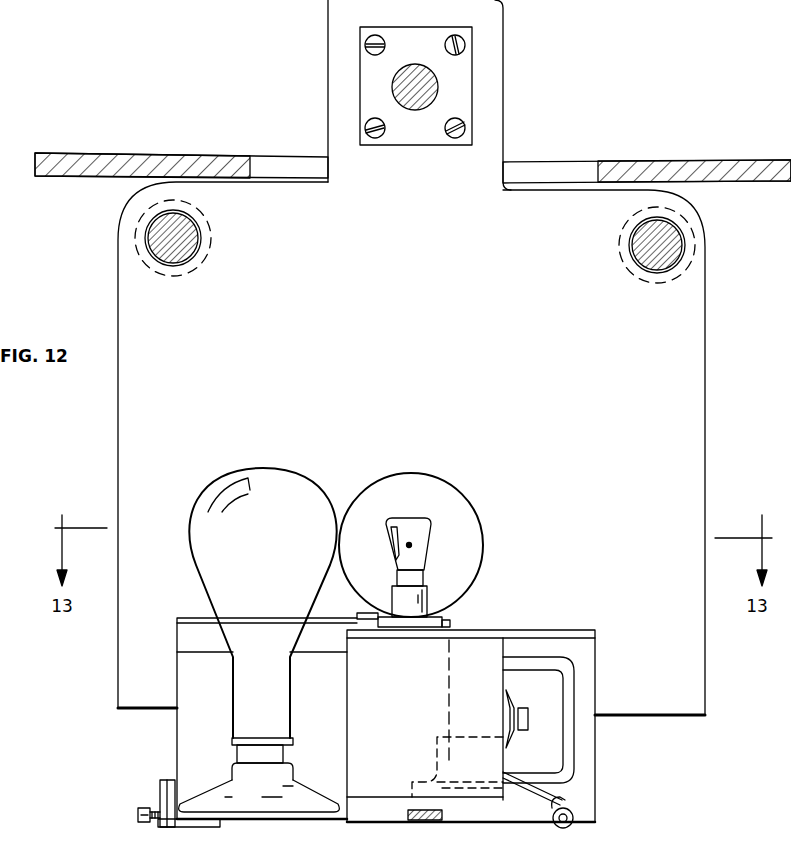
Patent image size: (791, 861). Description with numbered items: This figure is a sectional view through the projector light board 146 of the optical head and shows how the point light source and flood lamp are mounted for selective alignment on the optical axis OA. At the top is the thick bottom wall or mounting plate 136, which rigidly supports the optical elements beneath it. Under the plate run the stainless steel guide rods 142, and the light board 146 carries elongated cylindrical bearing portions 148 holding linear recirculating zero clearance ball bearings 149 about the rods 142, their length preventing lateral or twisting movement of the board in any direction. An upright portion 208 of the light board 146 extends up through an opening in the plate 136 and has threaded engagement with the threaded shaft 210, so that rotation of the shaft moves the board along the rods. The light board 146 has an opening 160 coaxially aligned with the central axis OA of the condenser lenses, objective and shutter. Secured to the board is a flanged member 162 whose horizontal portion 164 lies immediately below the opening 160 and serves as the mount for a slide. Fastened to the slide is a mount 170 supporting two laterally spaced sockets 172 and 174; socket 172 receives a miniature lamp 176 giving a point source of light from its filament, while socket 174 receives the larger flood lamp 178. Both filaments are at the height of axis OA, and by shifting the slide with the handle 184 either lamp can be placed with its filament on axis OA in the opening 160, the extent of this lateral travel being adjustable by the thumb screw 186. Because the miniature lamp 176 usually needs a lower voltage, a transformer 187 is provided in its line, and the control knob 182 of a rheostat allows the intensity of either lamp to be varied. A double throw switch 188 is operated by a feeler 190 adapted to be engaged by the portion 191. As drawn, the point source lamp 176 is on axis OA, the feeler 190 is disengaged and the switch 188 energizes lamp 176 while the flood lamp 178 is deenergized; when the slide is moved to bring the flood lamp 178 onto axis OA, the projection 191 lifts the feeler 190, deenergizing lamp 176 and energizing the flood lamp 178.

The upright portion 208 is at (328, 14).
The threaded shaft 210 is at (437, 96).
The bottom wall or mounting plate 136 is at (656, 161).
The cylindrical bearing portion 148 is at (215, 224).
The linear recirculating zero clearance ball bearing 149 is at (205, 238).
The guide rod 142 is at (193, 258).
The light board 146 is at (690, 388).
The flood lamp 178 is at (232, 475).
The miniature lamp 176 is at (400, 521).
The optical axis OA is at (411, 543).
The opening 160 is at (470, 558).
The socket 172 is at (427, 605).
The mount 170 is at (187, 718).
The socket 174 is at (233, 777).
The thumb screw 186 is at (145, 808).
The horizontal portion 164 is at (575, 632).
The flanged member 162 is at (588, 672).
The transformer 187 is at (441, 718).
The handle 184 is at (572, 742).
The control knob 182 is at (513, 708).
The feeler 190 is at (555, 800).
The double throw switch 188 is at (512, 790).
The projection 191 is at (440, 818).